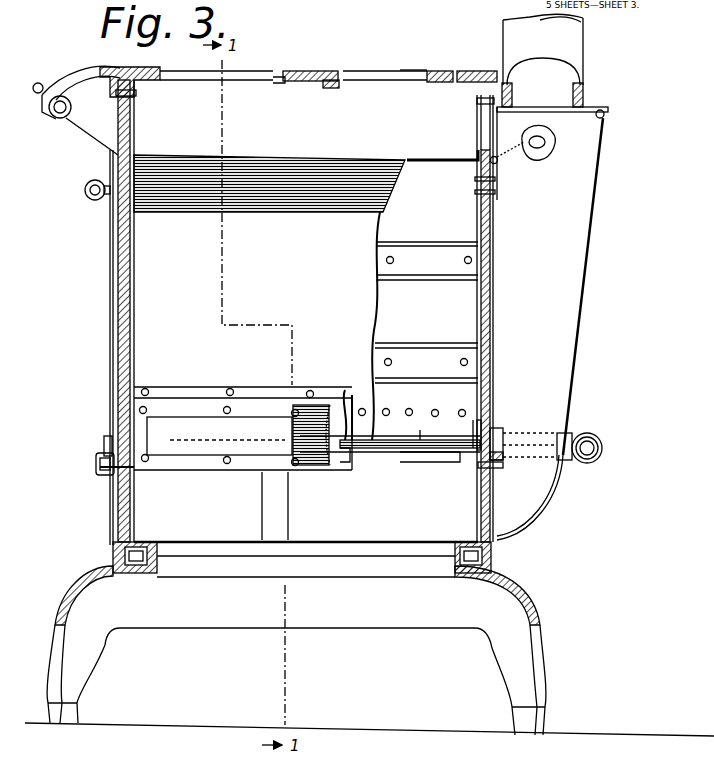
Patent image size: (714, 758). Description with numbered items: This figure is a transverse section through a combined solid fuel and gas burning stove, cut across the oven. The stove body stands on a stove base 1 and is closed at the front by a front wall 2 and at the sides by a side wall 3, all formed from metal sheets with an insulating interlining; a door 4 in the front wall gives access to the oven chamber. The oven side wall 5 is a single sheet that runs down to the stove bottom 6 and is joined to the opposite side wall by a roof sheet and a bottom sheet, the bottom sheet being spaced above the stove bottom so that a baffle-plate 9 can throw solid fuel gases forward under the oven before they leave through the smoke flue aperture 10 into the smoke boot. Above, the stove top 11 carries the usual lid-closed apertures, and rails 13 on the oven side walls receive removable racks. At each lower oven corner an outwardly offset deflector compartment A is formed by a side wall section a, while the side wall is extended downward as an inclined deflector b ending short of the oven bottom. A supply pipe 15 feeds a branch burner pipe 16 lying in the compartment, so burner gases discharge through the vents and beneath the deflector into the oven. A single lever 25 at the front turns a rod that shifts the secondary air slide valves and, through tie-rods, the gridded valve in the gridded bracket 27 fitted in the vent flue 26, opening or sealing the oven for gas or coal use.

The stove base 1 is at (334, 577).
The front wall 2 is at (134, 318).
The side wall 3 is at (425, 100).
The door 4 is at (110, 343).
The oven side wall 5 is at (478, 225).
The stove bottom 6 is at (220, 541).
The baffle-plate 9 is at (270, 518).
The smoke flue aperture 10 is at (478, 500).
The stove top 11 is at (330, 72).
The rails 13 is at (446, 345).
The supply pipe 15 is at (574, 444).
The branch burner pipe 16 is at (352, 462).
The lever 25 is at (100, 480).
The vent flue 26 is at (488, 432).
The gridded bracket 27 is at (488, 408).
The deflector compartment A is at (365, 364).
The side wall section a is at (345, 392).
The deflector b is at (380, 426).